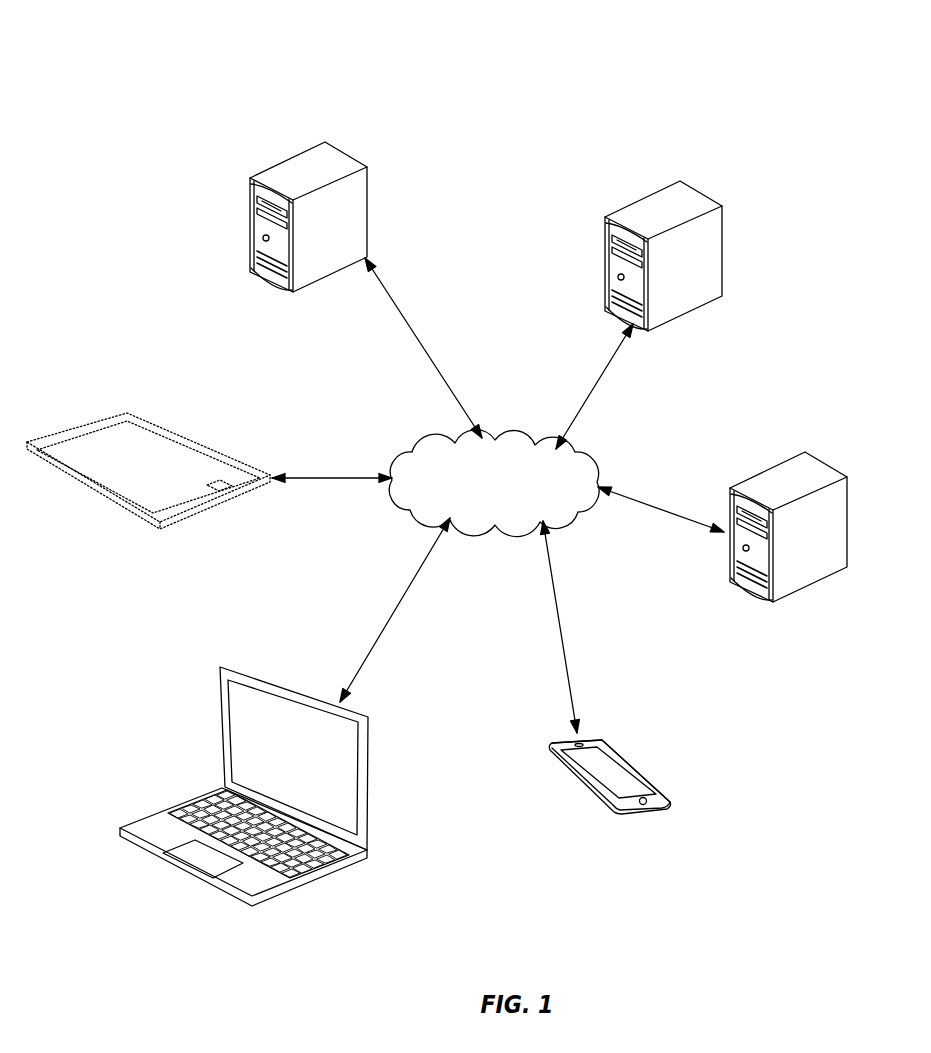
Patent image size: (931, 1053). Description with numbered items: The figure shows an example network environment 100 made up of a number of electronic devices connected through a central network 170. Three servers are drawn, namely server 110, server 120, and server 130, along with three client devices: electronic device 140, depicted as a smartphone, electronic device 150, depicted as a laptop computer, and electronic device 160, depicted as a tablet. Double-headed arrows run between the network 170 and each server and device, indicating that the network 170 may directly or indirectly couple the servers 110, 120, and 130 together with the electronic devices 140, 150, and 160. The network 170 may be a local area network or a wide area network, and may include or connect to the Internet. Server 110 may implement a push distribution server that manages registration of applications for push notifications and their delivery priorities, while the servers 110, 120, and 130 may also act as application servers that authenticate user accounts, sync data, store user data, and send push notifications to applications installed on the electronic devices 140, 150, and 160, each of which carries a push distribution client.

The network environment 100 is at (128, 98).
The server 110 is at (302, 148).
The server 120 is at (657, 187).
The server 130 is at (782, 458).
The electronic device 140 is at (633, 768).
The electronic device 150 is at (360, 860).
The electronic device 160 is at (165, 524).
The network 170 is at (413, 458).